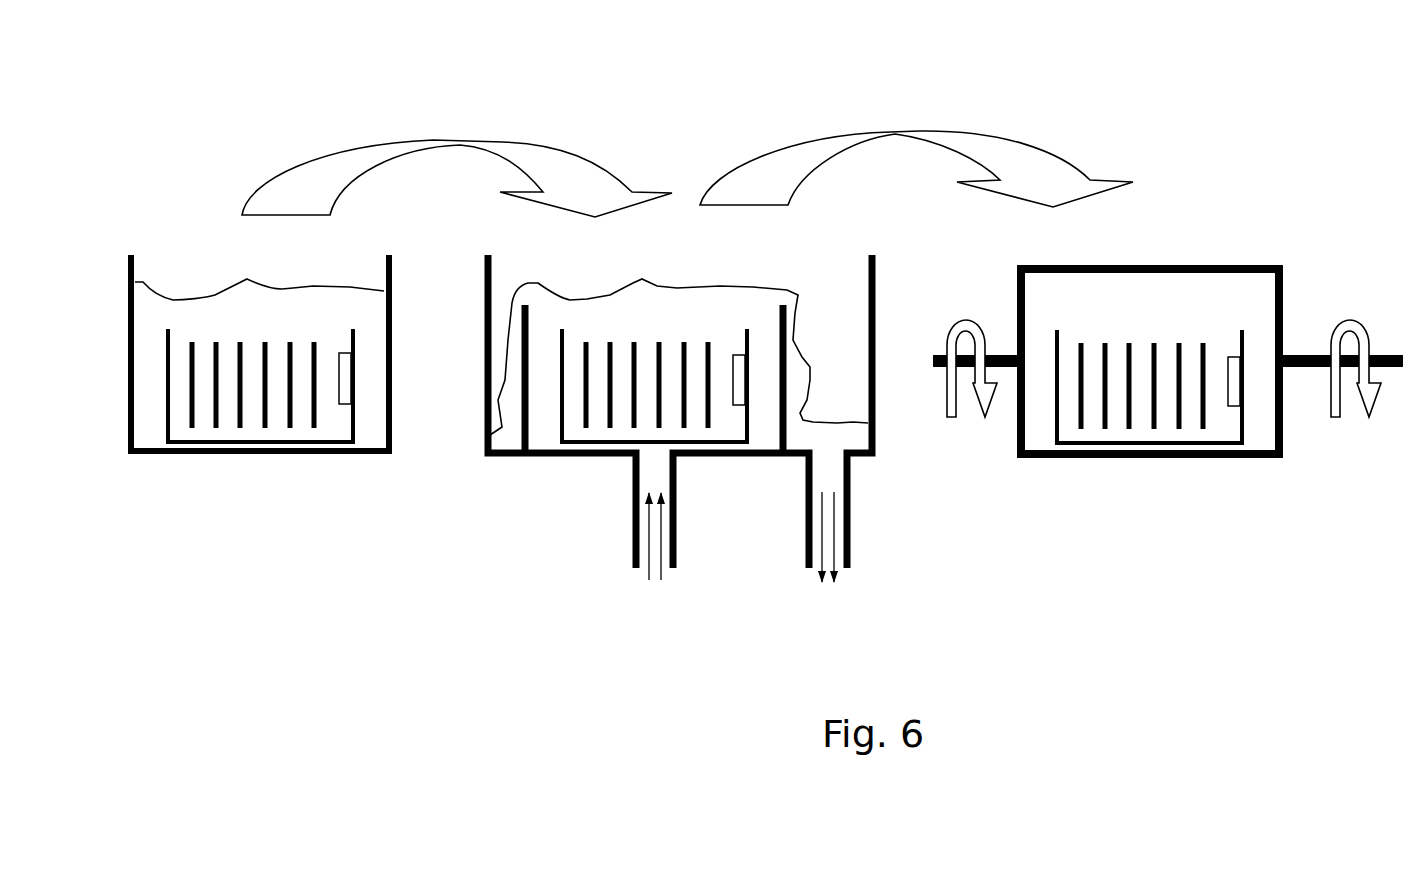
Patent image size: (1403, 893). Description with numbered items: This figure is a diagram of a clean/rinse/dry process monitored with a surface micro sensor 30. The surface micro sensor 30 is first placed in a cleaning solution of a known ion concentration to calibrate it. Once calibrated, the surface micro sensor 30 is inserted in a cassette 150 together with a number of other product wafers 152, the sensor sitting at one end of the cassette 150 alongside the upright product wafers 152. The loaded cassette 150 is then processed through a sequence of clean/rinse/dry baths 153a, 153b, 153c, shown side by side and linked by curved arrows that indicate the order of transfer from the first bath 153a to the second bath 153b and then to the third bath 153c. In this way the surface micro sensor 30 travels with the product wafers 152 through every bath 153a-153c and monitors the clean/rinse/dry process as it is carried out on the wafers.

The clean bath 153a is at (228, 228).
The rinse bath 153b is at (675, 230).
The dry bath 153c is at (1193, 217).
The product wafers 152 is at (238, 390).
The cassette 150 is at (253, 446).
The surface micro sensor 30 is at (339, 403).